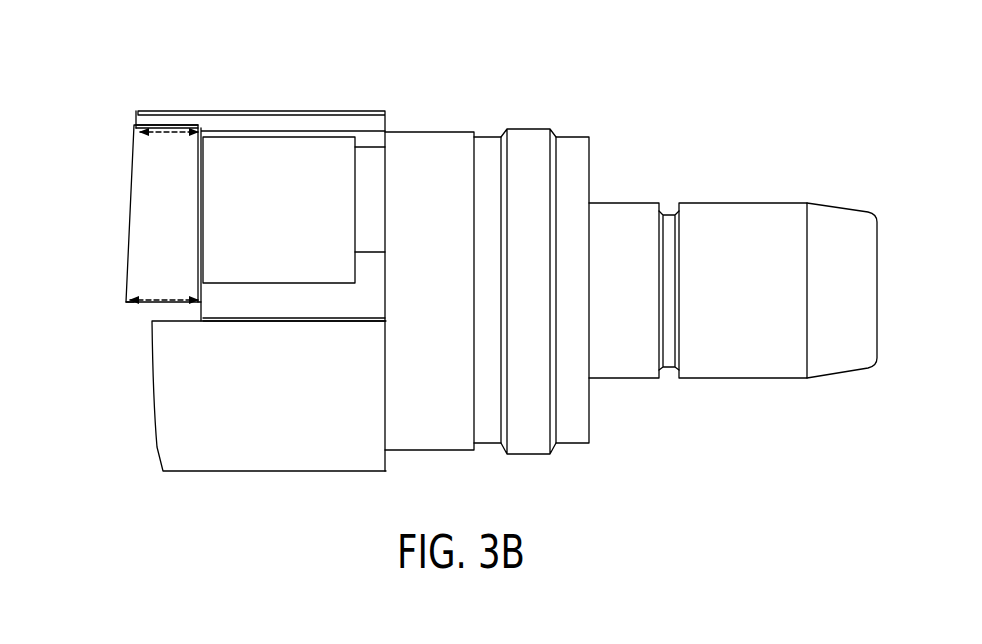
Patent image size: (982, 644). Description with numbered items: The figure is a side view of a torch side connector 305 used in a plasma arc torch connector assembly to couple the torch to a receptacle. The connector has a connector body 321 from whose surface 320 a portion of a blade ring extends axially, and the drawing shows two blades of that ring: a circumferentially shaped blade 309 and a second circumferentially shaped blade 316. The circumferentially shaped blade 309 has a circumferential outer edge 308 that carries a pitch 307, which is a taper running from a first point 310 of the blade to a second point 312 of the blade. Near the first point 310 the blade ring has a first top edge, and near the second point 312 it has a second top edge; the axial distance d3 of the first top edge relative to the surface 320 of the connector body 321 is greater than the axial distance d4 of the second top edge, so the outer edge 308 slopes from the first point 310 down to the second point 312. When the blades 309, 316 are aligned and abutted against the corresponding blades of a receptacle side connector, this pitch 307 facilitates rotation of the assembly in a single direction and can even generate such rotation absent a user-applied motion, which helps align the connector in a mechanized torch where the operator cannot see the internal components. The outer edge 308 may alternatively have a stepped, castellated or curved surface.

The torch side connector 305 is at (660, 121).
The pitch 307 is at (116, 177).
The circumferential outer edge 308 is at (127, 207).
The circumferentially shaped blade 309 is at (168, 122).
The first point 310 is at (126, 299).
The second point 312 is at (136, 123).
The circumferentially shaped blade 316 is at (266, 453).
The surface 320 is at (198, 306).
The connector body 321 is at (425, 434).
The axial distance d4 is at (163, 141).
The axial distance d3 is at (160, 296).